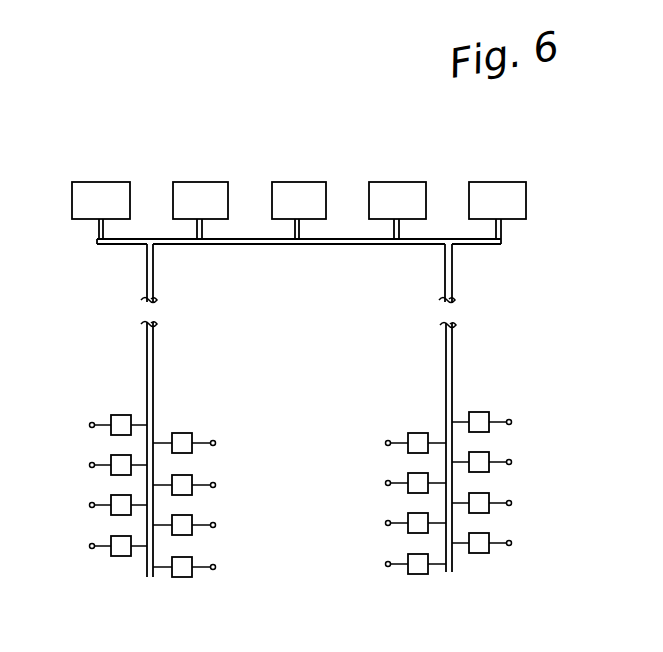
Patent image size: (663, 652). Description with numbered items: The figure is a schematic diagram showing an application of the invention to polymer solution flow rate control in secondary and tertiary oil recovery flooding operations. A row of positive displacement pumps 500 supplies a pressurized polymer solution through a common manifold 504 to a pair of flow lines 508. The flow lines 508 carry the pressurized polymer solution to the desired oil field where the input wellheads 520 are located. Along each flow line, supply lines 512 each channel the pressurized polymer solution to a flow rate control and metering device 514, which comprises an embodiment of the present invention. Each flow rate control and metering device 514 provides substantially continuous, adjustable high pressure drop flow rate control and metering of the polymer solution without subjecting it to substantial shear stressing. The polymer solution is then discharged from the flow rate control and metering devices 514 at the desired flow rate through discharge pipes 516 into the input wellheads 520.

The positive displacement pump 500 is at (280, 203).
The manifold 504 is at (266, 244).
The flow line 508 is at (147, 340).
The supply line 512 is at (163, 443).
The flow rate control and metering device 514 is at (183, 433).
The discharge pipe 516 is at (213, 443).
The input wellhead 520 is at (215, 445).